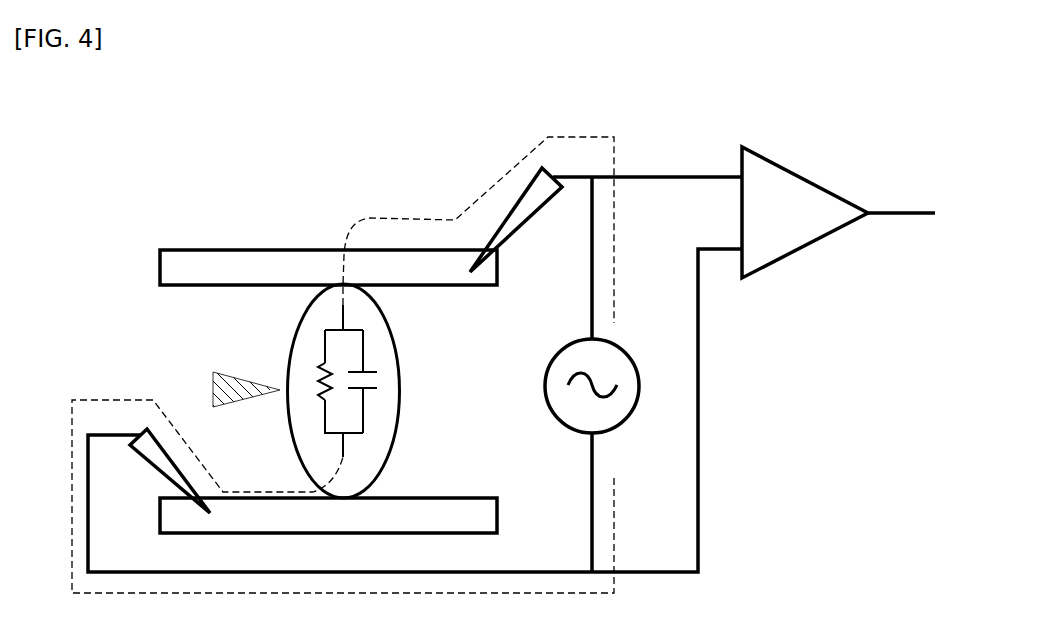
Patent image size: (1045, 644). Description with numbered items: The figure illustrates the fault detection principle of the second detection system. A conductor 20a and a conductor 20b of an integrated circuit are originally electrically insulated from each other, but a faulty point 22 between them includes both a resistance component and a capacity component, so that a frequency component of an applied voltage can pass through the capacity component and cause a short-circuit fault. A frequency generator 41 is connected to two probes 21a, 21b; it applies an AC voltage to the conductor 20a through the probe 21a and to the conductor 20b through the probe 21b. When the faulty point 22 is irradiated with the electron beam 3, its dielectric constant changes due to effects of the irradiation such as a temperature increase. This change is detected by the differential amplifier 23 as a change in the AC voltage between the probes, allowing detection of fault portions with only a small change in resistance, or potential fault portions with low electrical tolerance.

The electron beam 3 is at (222, 377).
The conductor 20a is at (190, 250).
The conductor 20b is at (413, 510).
The probe 21a is at (548, 170).
The probe 21b is at (138, 437).
The faulty point 22 is at (390, 408).
The differential amplifier 23 is at (783, 178).
The frequency generator 41 is at (622, 357).